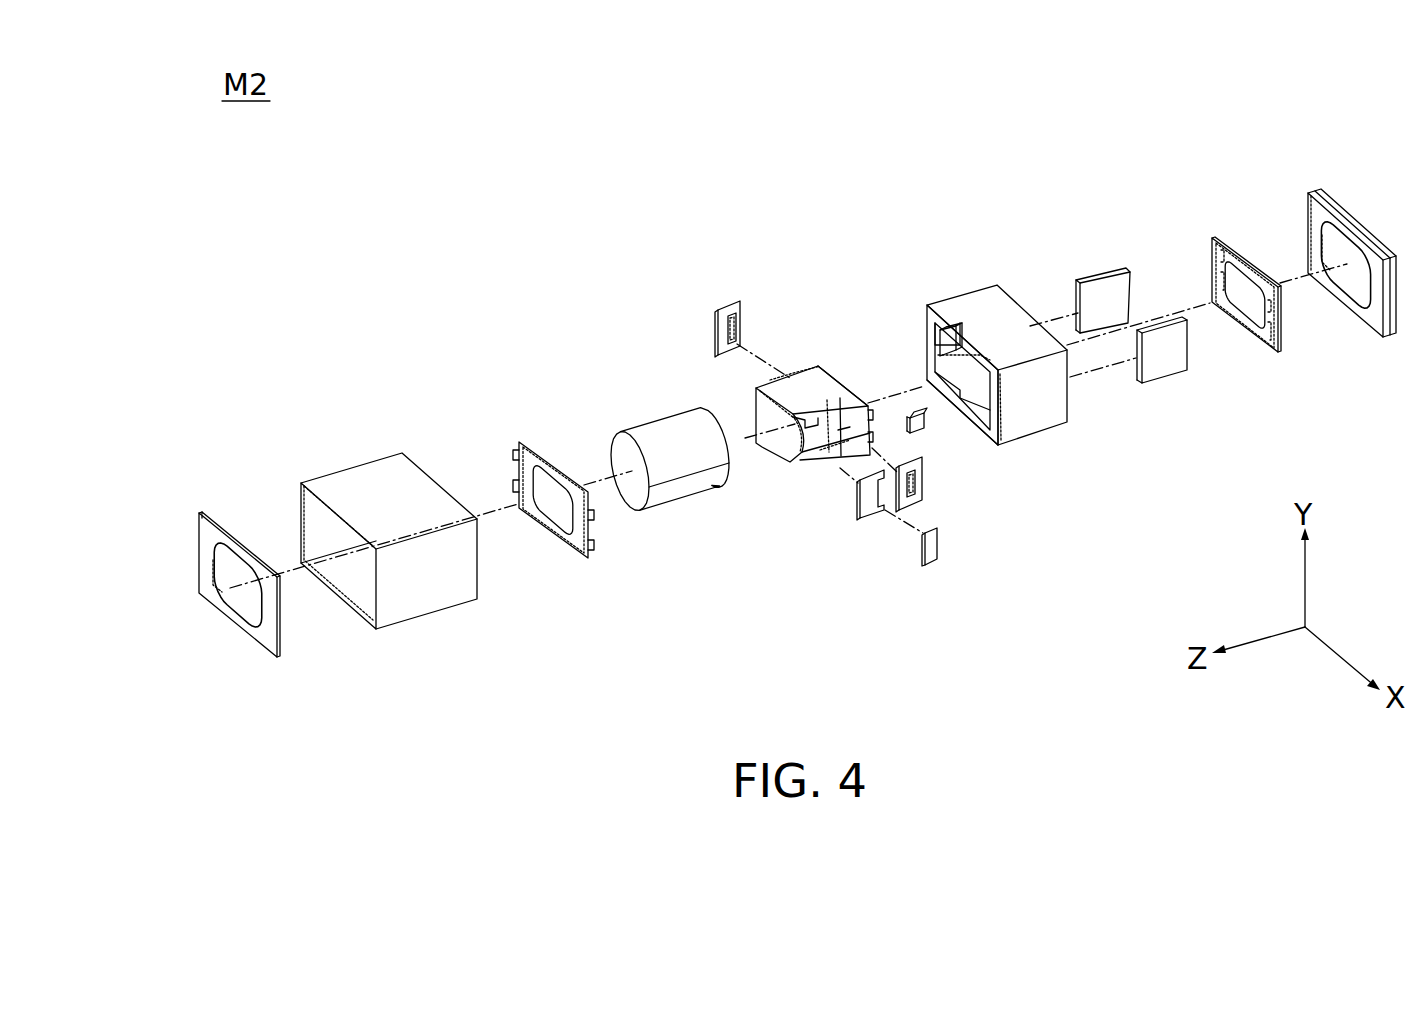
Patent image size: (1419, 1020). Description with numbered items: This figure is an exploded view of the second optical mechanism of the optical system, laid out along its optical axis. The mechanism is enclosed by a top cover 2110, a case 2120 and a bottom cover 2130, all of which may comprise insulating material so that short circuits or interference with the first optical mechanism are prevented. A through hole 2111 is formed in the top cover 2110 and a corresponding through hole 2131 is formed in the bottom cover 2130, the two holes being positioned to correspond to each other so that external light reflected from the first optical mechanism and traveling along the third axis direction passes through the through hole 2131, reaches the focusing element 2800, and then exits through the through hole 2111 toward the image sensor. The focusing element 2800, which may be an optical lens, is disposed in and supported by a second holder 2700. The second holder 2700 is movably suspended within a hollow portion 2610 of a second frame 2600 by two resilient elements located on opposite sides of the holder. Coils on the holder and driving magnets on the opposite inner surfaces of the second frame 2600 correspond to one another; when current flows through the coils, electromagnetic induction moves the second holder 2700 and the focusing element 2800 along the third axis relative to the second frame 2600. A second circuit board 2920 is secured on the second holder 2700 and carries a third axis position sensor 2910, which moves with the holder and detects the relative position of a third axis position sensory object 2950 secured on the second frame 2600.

The top cover 2110 is at (199, 508).
The through hole 2111 is at (245, 603).
The case 2120 is at (351, 465).
The focusing element 2800 is at (658, 416).
The second holder 2700 is at (788, 478).
The second circuit board 2920 is at (870, 508).
The third axis position sensor 2910 is at (932, 548).
The third axis position sensory object 2950 is at (920, 427).
The second frame 2600 is at (960, 294).
The hollow portion 2610 is at (952, 357).
The bottom cover 2130 is at (1317, 186).
The through hole 2131 is at (1358, 283).